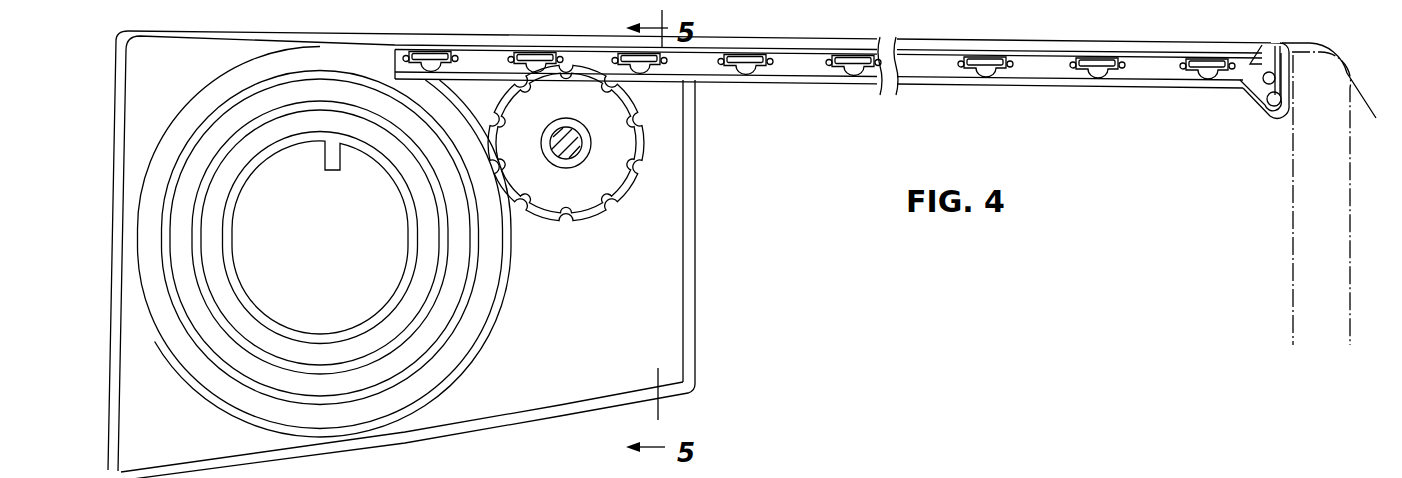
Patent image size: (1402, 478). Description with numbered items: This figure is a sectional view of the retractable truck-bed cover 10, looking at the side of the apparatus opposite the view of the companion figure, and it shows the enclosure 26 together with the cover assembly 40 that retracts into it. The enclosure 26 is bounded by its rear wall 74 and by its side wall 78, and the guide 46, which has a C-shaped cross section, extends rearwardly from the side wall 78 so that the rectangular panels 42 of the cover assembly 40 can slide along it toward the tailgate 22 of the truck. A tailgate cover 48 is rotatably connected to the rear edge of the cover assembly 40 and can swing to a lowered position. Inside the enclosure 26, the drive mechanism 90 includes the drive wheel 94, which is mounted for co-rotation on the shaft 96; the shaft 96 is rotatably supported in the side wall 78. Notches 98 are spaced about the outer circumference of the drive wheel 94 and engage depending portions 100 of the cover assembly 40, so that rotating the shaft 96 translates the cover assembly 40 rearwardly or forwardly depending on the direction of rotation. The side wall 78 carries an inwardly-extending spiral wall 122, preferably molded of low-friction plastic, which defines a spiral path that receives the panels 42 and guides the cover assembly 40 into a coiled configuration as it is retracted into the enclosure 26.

The cover 10 is at (773, 265).
The tailgate 22 is at (1292, 235).
The enclosure 26 is at (695, 332).
The cover assembly 40 is at (929, 50).
The panels 42 is at (1042, 50).
The guide 46 is at (850, 50).
The tailgate cover 48 is at (1350, 68).
The rear wall 74 is at (686, 284).
The side wall 78 is at (636, 343).
The drive mechanism 90 is at (583, 242).
The drive wheel 94 is at (573, 163).
The shaft 96 is at (574, 150).
The notches 98 is at (648, 170).
The depending portions 100 is at (832, 80).
The spiral wall 122 is at (224, 106).